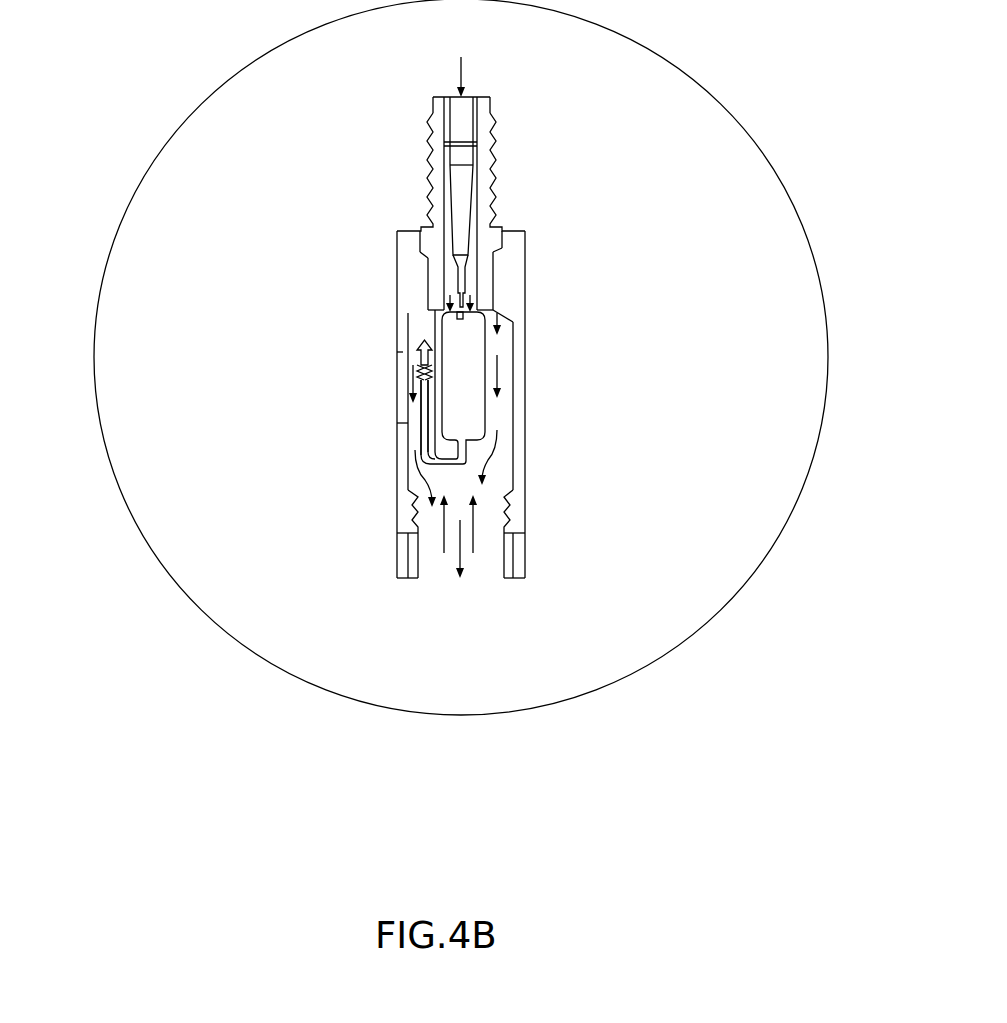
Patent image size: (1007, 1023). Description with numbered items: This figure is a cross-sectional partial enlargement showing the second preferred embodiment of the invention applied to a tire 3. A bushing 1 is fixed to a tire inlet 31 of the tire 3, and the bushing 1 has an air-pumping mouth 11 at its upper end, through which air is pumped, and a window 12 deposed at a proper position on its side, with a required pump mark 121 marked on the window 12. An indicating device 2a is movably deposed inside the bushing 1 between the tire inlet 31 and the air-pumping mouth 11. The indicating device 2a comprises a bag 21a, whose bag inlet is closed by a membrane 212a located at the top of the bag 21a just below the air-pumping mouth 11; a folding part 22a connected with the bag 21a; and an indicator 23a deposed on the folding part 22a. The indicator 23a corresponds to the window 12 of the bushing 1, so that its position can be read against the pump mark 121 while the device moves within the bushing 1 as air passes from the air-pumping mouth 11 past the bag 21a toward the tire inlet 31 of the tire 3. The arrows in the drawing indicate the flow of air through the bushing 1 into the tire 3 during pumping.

The bushing 1 is at (532, 290).
The air-pumping mouth 11 is at (400, 141).
The window 12 is at (410, 318).
The pump mark 121 is at (402, 387).
The indicating device 2a is at (506, 473).
The bag 21a is at (487, 377).
The membrane 212a is at (457, 317).
The folding part 22a is at (420, 363).
The indicator 23a is at (424, 330).
The tire 3 is at (660, 550).
The tire inlet 31 is at (440, 528).